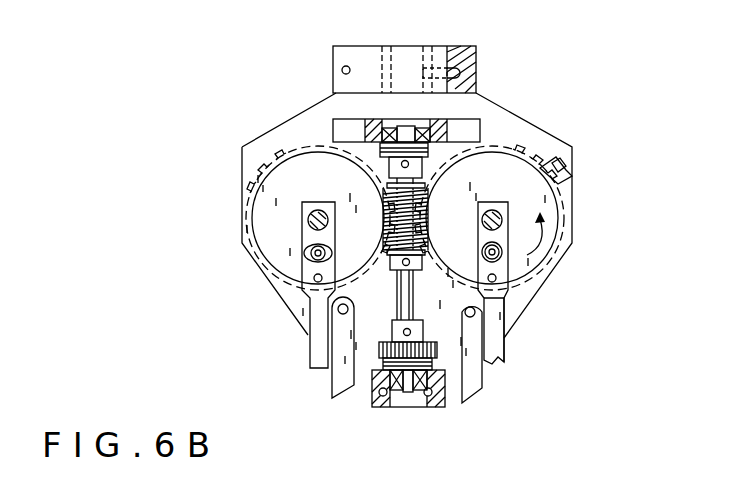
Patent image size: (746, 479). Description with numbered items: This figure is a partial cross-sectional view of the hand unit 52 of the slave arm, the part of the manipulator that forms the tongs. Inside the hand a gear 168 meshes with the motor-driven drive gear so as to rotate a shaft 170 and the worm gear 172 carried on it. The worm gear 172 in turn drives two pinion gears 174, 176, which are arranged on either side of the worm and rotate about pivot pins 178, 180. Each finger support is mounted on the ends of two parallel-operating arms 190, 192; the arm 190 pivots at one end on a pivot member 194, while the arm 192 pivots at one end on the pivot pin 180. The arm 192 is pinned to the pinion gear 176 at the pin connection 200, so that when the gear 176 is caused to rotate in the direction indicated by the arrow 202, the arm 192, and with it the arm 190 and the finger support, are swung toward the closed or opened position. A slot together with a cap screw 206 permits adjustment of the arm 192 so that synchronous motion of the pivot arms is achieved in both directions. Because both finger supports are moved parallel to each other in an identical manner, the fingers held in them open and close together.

The hand unit 52 is at (208, 98).
The gear 168 is at (378, 350).
The shaft 170 is at (398, 290).
The worm gear 172 is at (387, 255).
The pinion gear 174 is at (256, 233).
The pinion gear 176 is at (517, 160).
The pivot pin 178 is at (303, 220).
The pivot pin 180 is at (500, 212).
The arm 190 is at (480, 389).
The arm 192 is at (503, 318).
The pivot member 194 is at (472, 313).
The pin connection 200 is at (496, 280).
The arrow 202 is at (528, 254).
The cap screw 206 is at (505, 254).